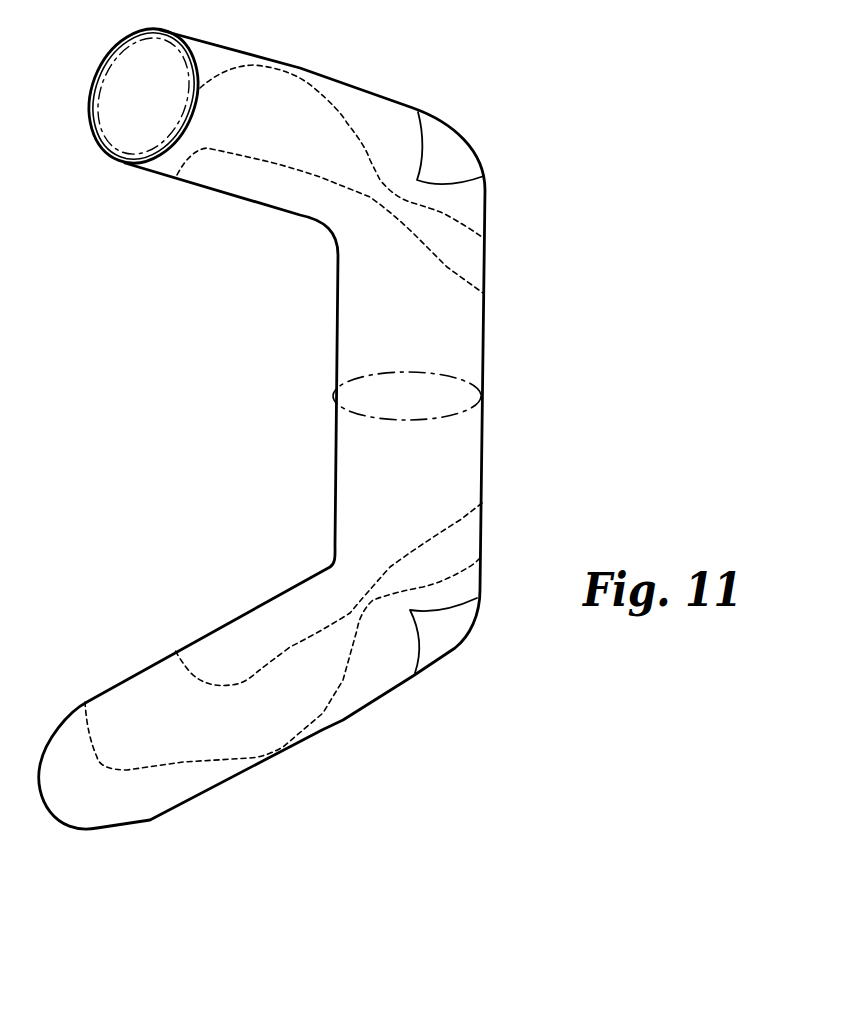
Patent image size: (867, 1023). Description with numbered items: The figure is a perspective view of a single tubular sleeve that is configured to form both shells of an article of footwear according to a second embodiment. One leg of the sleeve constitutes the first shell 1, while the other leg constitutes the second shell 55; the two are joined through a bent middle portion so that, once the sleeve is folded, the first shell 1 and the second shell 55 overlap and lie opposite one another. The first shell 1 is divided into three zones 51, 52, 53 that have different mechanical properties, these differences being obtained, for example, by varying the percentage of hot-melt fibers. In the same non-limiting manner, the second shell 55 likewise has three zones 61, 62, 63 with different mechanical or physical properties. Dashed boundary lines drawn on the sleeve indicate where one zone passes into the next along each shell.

The first shell 1 is at (157, 596).
The zone 51 is at (192, 782).
The zone 52 is at (308, 695).
The zone 53 is at (442, 483).
The second shell 55 is at (243, 223).
The zone 61 is at (388, 114).
The zone 62 is at (457, 248).
The zone 63 is at (448, 343).